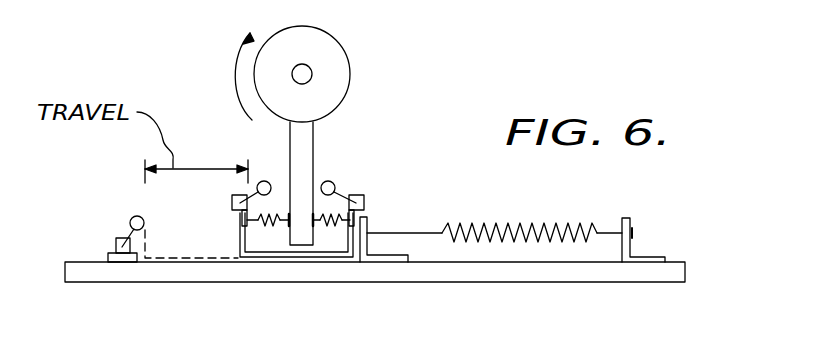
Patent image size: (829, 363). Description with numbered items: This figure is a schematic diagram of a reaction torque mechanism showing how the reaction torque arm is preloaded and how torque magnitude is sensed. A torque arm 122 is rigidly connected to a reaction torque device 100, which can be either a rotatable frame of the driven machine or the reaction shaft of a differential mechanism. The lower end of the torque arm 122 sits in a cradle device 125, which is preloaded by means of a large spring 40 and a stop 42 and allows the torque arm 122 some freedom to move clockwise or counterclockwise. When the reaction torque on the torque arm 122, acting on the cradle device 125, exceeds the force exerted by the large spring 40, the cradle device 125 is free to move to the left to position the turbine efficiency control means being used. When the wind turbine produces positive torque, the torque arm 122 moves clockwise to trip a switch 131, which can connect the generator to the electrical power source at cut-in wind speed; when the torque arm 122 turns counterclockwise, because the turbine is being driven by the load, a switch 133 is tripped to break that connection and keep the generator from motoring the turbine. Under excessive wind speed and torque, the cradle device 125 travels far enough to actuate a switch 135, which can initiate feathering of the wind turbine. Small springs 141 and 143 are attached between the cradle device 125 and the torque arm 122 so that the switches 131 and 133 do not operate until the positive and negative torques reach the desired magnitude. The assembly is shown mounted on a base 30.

The reaction torque device 100 is at (340, 57).
The torque arm 122 is at (306, 135).
The switch 131 is at (232, 202).
The switch 133 is at (356, 200).
The cradle device 125 is at (253, 256).
The small spring 141 is at (262, 224).
The small spring 143 is at (333, 226).
The switch 135 is at (116, 243).
The large spring 40 is at (492, 225).
The stop 42 is at (400, 256).
The base plate 30 is at (634, 272).